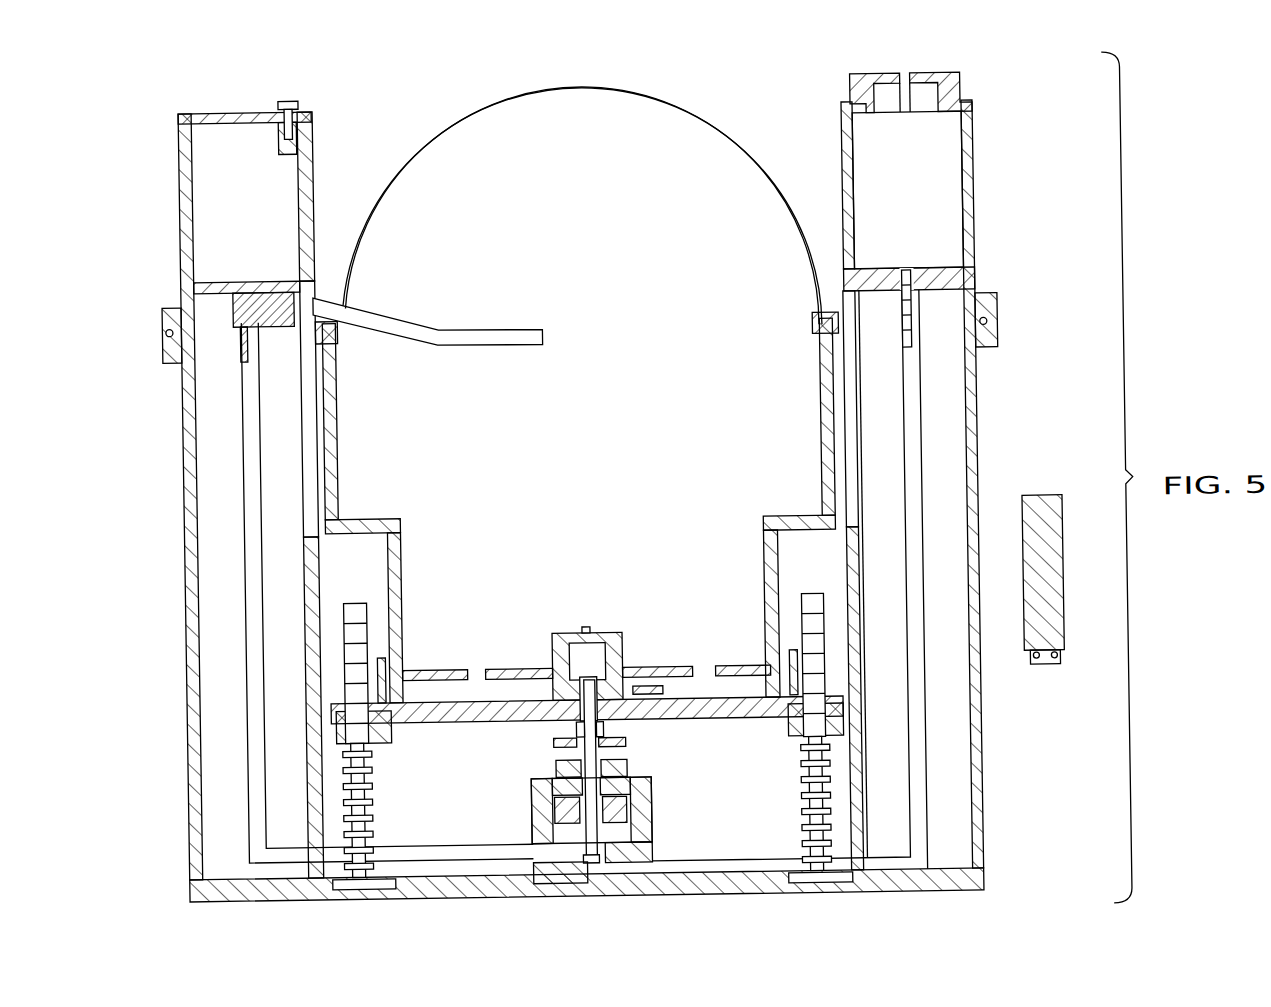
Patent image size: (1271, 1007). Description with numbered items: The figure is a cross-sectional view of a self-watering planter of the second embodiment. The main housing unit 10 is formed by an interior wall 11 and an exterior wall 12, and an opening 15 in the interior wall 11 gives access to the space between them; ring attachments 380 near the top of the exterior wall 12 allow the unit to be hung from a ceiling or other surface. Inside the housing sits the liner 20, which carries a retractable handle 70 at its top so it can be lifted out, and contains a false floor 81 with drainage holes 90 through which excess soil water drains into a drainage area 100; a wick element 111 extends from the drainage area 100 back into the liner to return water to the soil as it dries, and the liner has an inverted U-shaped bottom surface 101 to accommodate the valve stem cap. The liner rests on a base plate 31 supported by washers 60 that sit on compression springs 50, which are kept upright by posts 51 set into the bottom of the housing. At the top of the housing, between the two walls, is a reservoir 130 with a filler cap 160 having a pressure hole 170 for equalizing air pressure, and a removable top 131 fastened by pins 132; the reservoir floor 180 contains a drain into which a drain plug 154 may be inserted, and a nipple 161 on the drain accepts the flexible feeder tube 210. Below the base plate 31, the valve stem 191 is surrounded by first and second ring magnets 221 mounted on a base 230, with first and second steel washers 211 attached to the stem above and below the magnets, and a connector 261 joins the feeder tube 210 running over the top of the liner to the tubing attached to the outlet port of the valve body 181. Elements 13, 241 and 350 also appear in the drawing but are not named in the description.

The main housing unit 10 is at (978, 206).
The interior wall 11 is at (303, 716).
The exterior wall 12 is at (184, 460).
The base plate 13 is at (220, 872).
The opening 15 is at (303, 449).
The liner 20 is at (340, 443).
The base plate 31 is at (700, 722).
The compression springs 50 is at (370, 793).
The posts 51 is at (353, 599).
The washers 60 is at (389, 735).
The retractable handle 70 is at (720, 136).
The false floor 81 is at (437, 668).
The drainage holes 90 is at (473, 668).
The drainage area 100 is at (505, 676).
The inverted U-shaped bottom surface 101 is at (612, 656).
The wick element 111 is at (563, 632).
The reservoir 130 is at (573, 192).
The removable top 131 is at (214, 106).
The pins 132 is at (297, 97).
The drain plug 154 is at (915, 329).
The filler cap 160 is at (966, 96).
The nipple 161 is at (1060, 666).
The pressure hole 170 is at (910, 92).
The reservoir floor 180 is at (246, 276).
The valve body 181 is at (647, 846).
The valve stem 191 is at (596, 752).
The feeder tube 210 is at (462, 326).
The steel washers 211 is at (550, 743).
The ring magnets 221 is at (552, 768).
The base 230 is at (647, 807).
The collar 241 is at (602, 730).
The connector 261 is at (271, 325).
The valve body 350 is at (600, 640).
The ring attachments 380 is at (165, 326).